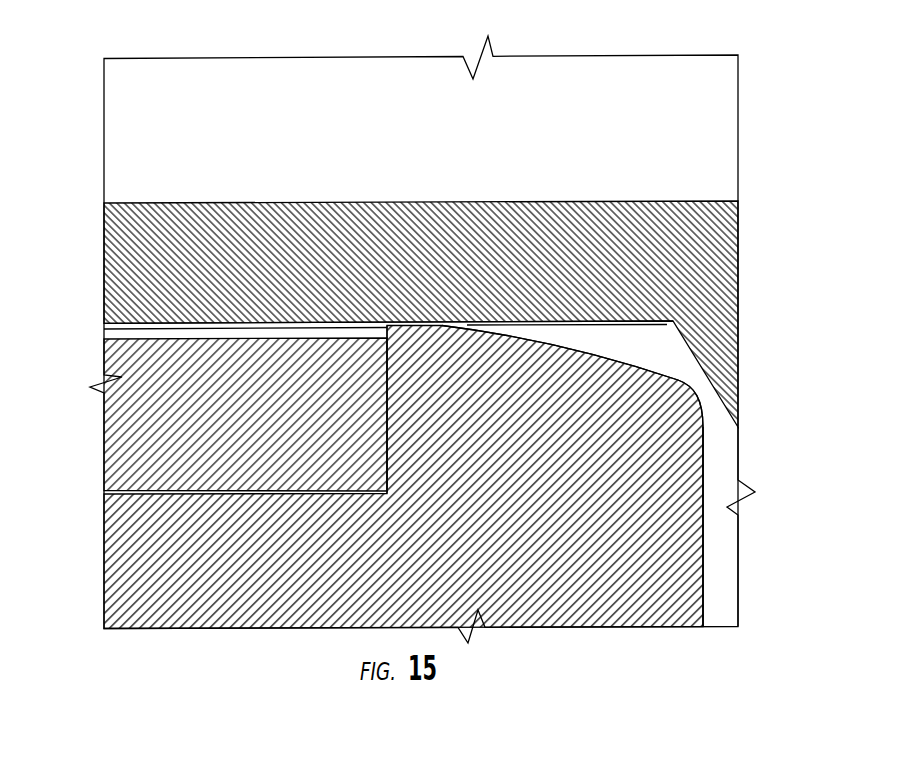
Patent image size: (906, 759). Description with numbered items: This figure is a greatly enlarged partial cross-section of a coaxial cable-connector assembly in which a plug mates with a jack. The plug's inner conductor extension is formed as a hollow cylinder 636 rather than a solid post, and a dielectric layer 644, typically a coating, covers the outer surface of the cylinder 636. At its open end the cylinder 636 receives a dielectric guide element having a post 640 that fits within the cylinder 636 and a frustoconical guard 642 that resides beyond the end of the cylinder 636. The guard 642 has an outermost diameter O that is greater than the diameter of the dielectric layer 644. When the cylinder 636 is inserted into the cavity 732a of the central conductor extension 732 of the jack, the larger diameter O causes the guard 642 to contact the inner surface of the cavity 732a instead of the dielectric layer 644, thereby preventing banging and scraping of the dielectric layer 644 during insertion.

The central conductor extension 732 is at (723, 302).
The cavity 732a is at (716, 454).
The dielectric layer 644 is at (115, 338).
The hollow cylinder 636 is at (112, 365).
The post 640 is at (133, 593).
The frustoconical guard 642 is at (575, 433).
The outermost diameter O is at (531, 325).